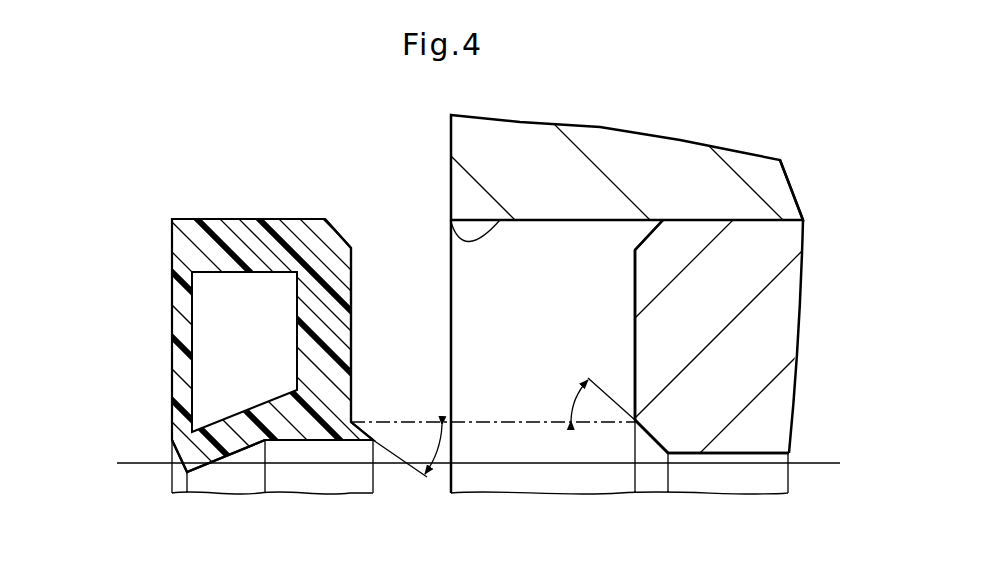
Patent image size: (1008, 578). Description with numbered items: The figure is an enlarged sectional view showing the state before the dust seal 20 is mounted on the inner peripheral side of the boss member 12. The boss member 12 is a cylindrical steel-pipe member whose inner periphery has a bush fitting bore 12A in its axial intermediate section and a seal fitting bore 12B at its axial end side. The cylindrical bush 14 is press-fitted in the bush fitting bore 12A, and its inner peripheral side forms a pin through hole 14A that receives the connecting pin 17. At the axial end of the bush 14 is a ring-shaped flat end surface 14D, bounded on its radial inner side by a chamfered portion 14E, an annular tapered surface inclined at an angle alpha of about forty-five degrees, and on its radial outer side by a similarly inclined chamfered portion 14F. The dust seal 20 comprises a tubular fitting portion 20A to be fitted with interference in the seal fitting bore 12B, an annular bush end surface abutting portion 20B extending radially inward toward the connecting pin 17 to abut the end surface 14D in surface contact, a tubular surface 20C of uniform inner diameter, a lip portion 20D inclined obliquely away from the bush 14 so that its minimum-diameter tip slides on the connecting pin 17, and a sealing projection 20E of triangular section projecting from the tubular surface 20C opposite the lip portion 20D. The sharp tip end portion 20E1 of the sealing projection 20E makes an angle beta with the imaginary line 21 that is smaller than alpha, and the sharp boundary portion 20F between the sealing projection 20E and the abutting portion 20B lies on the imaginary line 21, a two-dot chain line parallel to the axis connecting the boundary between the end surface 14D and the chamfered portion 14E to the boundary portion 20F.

The dust seal 20 is at (270, 210).
The tubular fitting portion 20A is at (222, 232).
The bush end surface abutting portion 20B is at (332, 300).
The tubular surface 20C is at (292, 441).
The lip portion 20D is at (187, 445).
The sealing projection 20E is at (360, 441).
The tip end portion 20E1 is at (378, 437).
The boundary portion 20F is at (352, 420).
The boss member 12 is at (688, 178).
The bush fitting bore 12A is at (765, 222).
The seal fitting bore 12B is at (450, 217).
The bush 14 is at (760, 328).
The pin through hole 14A is at (735, 455).
The end surface 14D is at (635, 338).
The chamfered portion 14E is at (648, 438).
The chamfered portion 14F is at (645, 240).
The connecting pin 17 is at (812, 462).
The imaginary line 21 is at (508, 425).